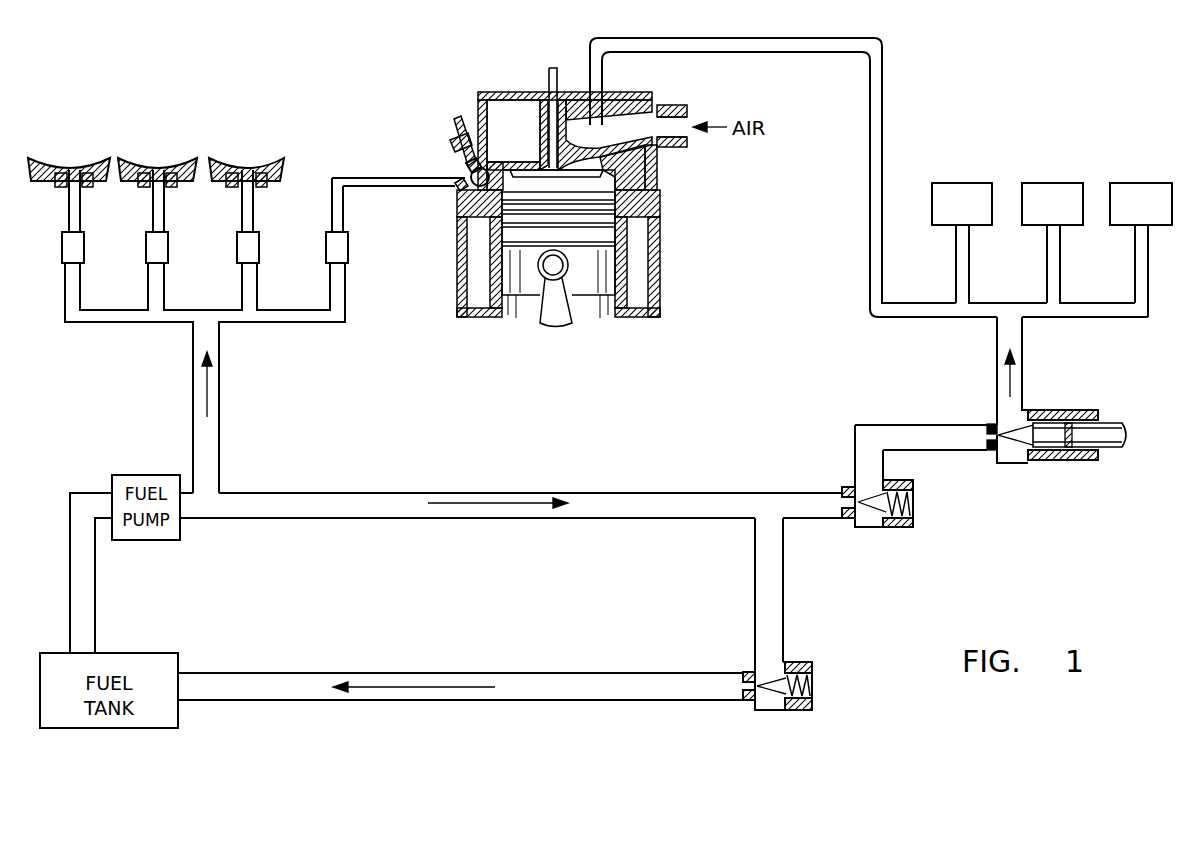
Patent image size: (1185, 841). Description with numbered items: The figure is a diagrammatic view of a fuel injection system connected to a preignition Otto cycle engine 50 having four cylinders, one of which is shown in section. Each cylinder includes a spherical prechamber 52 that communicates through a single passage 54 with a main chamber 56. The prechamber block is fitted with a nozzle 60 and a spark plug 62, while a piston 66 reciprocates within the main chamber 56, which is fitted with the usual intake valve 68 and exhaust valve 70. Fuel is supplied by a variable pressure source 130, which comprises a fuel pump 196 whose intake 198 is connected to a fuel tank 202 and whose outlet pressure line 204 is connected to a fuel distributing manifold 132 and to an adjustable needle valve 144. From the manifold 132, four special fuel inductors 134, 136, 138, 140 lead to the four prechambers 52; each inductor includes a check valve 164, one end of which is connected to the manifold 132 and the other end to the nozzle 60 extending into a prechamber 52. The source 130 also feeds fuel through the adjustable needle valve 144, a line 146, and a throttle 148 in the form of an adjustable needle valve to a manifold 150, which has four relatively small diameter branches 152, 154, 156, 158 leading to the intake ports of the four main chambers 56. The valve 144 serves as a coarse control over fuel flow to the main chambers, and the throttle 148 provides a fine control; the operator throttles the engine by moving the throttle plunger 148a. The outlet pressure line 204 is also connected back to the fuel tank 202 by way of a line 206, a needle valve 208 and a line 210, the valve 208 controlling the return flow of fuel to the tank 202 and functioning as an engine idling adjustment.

The preignition Otto cycle engine 50 is at (128, 60).
The spherical prechamber 52 is at (60, 170).
The single passage 54 is at (508, 168).
The main chamber 56 is at (593, 182).
The nozzle 60 is at (95, 180).
The spark plug 62 is at (462, 140).
The piston 66 is at (528, 282).
The intake valve 68 is at (553, 78).
The exhaust valve 70 is at (647, 200).
The variable pressure source 130 is at (60, 443).
The fuel distributing manifold 132 is at (176, 345).
The fuel inductor 134 is at (362, 245).
The fuel inductor 136 is at (267, 245).
The fuel inductor 138 is at (187, 245).
The fuel inductor 140 is at (100, 253).
The adjustable needle valve 144 is at (908, 528).
The line 146 is at (913, 430).
The throttle 148 is at (1013, 443).
The throttle plunger 148a is at (1112, 447).
The manifold 150 is at (925, 352).
The branch 152 is at (827, 43).
The branch 154 is at (958, 270).
The branch 156 is at (1048, 270).
The branch 158 is at (1136, 270).
The check valve 164 is at (62, 246).
The fuel pump 196 is at (168, 530).
The intake 198 is at (93, 585).
The fuel tank 202 is at (165, 670).
The outlet pressure line 204 is at (320, 510).
The line 206 is at (762, 605).
The needle valve 208 is at (812, 700).
The line 210 is at (507, 685).